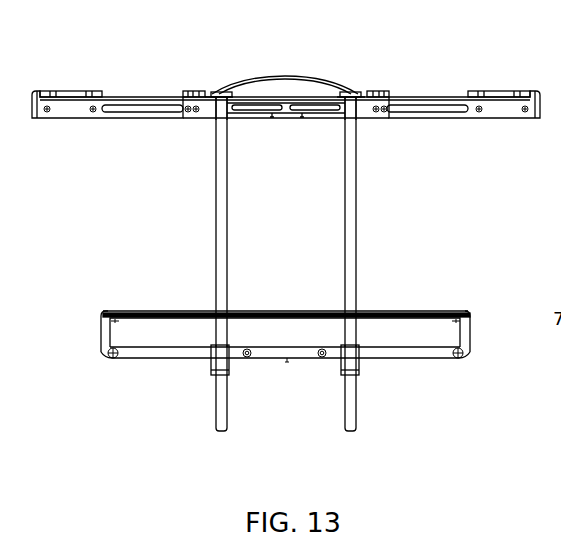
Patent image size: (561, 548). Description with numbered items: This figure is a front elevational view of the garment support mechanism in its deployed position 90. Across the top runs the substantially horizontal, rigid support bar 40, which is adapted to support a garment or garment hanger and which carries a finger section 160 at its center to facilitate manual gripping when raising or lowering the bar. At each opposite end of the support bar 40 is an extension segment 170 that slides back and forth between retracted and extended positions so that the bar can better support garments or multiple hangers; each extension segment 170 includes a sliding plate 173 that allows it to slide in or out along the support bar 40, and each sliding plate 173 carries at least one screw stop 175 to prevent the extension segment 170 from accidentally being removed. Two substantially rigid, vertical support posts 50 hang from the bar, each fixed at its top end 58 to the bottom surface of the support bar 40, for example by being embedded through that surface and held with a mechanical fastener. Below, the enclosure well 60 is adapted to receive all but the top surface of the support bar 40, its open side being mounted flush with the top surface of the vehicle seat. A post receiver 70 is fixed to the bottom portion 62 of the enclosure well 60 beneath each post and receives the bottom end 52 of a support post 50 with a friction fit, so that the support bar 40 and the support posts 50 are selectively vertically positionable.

The support bar 40 is at (159, 62).
The deployed position 90 is at (452, 38).
The finger section 160 is at (290, 73).
The extension segment 170 is at (80, 88).
The sliding plate 173 is at (75, 110).
The screw stop 175 is at (188, 111).
The top end 58 is at (222, 115).
The support post 50 is at (216, 186).
The enclosure well 60 is at (171, 294).
The bottom portion 62 is at (189, 370).
The post receiver 70 is at (210, 367).
The bottom end 52 is at (226, 409).